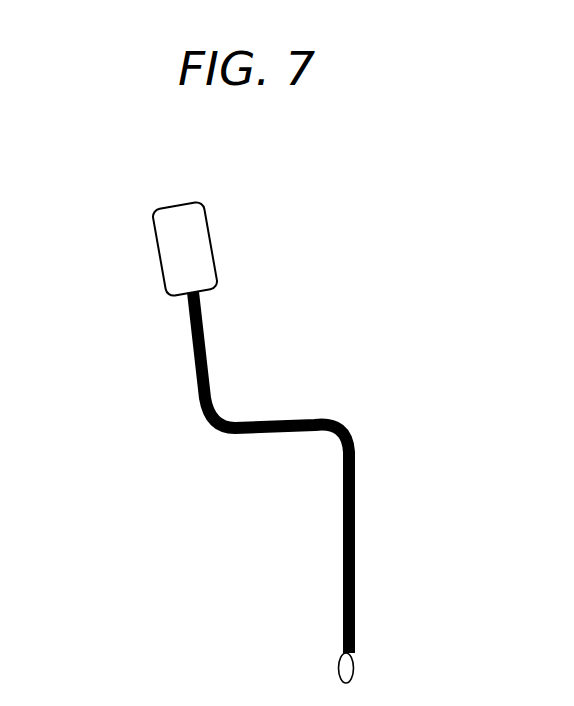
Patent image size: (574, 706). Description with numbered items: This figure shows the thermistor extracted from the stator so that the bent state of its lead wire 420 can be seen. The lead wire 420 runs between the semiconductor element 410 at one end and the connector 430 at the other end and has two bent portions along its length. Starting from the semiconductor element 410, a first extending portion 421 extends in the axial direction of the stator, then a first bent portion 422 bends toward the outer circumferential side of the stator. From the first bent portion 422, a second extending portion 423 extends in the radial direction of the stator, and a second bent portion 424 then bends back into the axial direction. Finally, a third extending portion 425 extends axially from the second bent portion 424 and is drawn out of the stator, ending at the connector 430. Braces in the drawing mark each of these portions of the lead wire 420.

The connector 430 is at (163, 270).
The lead wire 420 is at (345, 507).
The semiconductor element 410 is at (339, 672).
The third extending portion 425 is at (182, 301).
The second bent portion 424 is at (198, 414).
The second extending portion 423 is at (305, 421).
The first bent portion 422 is at (358, 427).
The first extending portion 421 is at (362, 431).